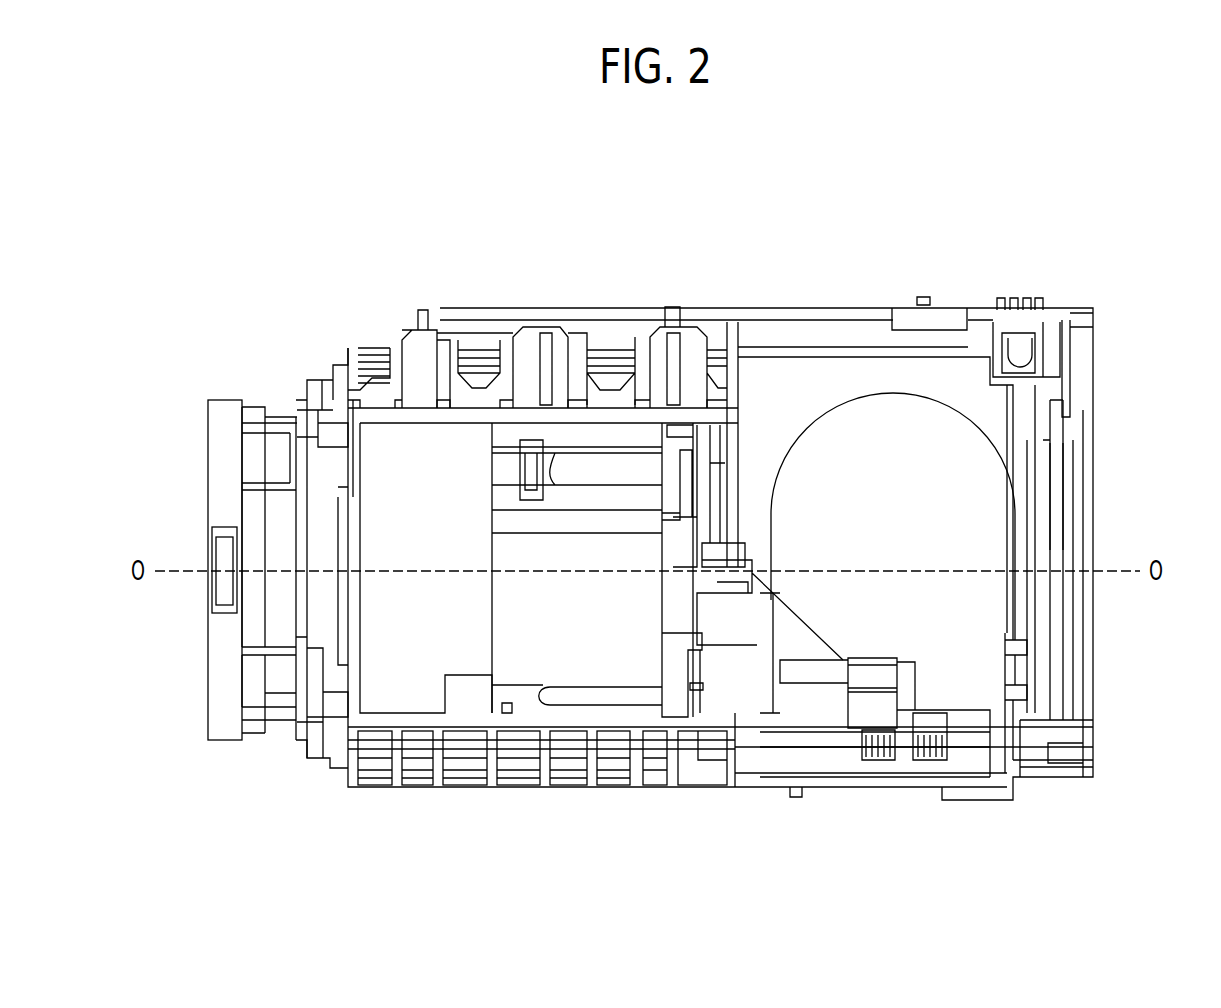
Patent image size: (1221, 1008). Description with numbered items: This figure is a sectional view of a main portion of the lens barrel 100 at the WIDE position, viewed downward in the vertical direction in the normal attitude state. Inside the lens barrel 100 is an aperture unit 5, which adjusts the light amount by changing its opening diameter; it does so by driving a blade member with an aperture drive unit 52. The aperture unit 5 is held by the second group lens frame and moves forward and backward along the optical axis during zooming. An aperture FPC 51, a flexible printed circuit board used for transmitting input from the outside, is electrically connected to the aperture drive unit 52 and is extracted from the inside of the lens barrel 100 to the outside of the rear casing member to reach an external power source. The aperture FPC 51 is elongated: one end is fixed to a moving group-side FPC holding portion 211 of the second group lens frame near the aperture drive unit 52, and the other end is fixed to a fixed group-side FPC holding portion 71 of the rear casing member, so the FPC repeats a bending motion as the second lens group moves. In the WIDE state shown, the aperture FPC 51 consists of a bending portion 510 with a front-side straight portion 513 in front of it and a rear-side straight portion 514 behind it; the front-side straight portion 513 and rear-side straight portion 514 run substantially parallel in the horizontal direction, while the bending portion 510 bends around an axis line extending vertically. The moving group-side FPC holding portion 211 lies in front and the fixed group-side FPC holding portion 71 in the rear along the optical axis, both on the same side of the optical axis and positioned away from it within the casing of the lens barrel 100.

The lens barrel 100 is at (147, 227).
The aperture unit 5 is at (673, 533).
The aperture drive unit 52 is at (745, 553).
The aperture FPC 51 is at (850, 400).
The bending portion 510 is at (990, 437).
The rear-side straight portion 514 is at (1050, 547).
The fixed group-side FPC holding portion 71 is at (1040, 647).
The front-side straight portion 513 is at (750, 560).
The moving group-side FPC holding portion 211 is at (773, 693).